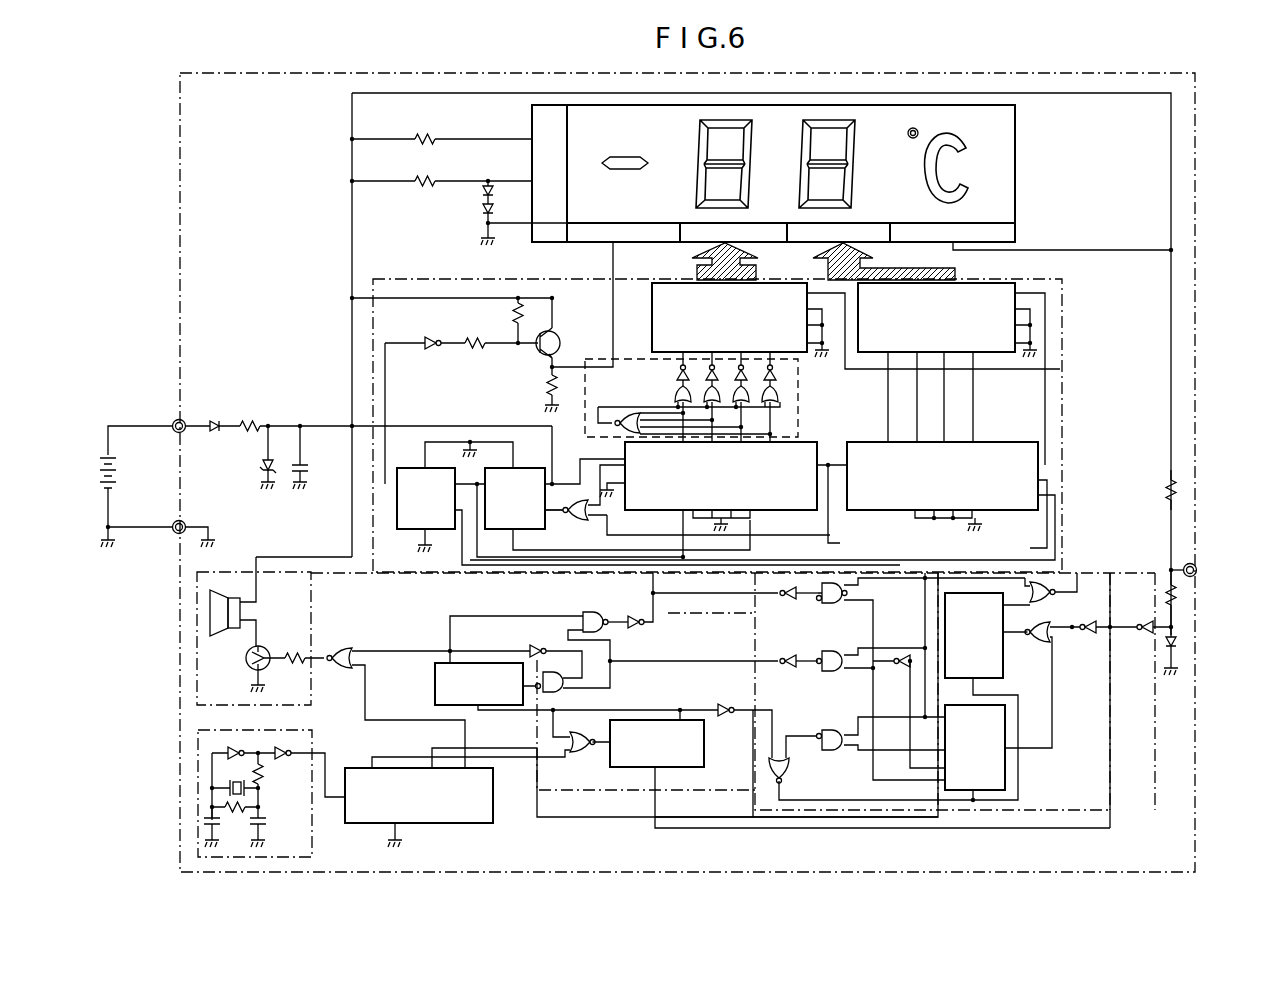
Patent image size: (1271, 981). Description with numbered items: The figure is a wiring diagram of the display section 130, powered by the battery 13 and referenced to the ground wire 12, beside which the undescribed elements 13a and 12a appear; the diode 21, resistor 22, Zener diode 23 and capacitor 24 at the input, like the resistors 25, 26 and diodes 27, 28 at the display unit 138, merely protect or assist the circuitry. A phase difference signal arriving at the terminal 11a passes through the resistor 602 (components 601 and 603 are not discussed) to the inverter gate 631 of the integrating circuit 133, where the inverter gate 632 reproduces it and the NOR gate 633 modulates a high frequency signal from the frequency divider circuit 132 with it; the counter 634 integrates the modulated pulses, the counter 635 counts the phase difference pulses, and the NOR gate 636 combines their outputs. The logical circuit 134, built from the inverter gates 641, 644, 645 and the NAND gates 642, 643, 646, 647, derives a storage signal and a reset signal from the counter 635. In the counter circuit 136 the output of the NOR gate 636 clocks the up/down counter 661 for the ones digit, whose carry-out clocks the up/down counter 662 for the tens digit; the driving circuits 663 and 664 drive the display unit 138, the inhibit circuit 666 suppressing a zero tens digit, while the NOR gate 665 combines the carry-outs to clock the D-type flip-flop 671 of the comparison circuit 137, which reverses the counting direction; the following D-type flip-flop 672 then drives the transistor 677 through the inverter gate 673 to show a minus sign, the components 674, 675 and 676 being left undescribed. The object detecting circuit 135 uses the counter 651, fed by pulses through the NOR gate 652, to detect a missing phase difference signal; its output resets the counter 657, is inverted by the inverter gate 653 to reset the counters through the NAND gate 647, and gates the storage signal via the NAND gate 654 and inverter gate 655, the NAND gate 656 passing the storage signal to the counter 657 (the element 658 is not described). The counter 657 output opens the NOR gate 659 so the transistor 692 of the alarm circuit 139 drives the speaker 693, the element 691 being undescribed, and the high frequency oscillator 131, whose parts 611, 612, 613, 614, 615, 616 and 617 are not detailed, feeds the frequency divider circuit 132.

The display section 130 is at (800, 73).
The display unit 138 is at (1015, 170).
The resistor 26 is at (432, 137).
The resistor 25 is at (432, 179).
The diode 27 is at (481, 191).
The diode 28 is at (481, 214).
The counter circuit 136 is at (1062, 296).
The comparison circuit 137 is at (373, 328).
The inverter gate 673 is at (430, 336).
The resistor 674 is at (478, 350).
The resistor 675 is at (516, 314).
The resistor 676 is at (547, 386).
The transistor 677 is at (546, 354).
The driving circuit 664 is at (652, 296).
The driving circuit 663 is at (1000, 352).
The inhibit circuit 666 is at (645, 359).
The NOR gate 665 is at (578, 500).
The up/down counter 662 is at (838, 432).
The up/down counter 661 is at (1028, 442).
The D-type flip-flop 672 is at (417, 462).
The D-type flip-flop 671 is at (530, 468).
The resistor 601 is at (1168, 490).
The resistor 602 is at (1178, 596).
The diode 603 is at (1178, 644).
The terminal 11a is at (1196, 564).
The inverter gate 631 is at (1142, 632).
The inverter gate 632 is at (1055, 600).
The NOR gate 633 is at (1042, 642).
The counter 634 is at (1064, 664).
The counter 635 is at (1005, 770).
The NOR gate 636 is at (1050, 600).
The inverter gate 641 is at (900, 668).
The NAND gate 642 is at (835, 603).
The NAND gate 643 is at (833, 671).
The inverter gate 644 is at (784, 600).
The inverter gate 645 is at (784, 668).
The NAND gate 646 is at (835, 751).
The NAND gate 647 is at (785, 770).
The counter 651 is at (704, 756).
The NOR gate 652 is at (578, 754).
The inverter gate 653 is at (726, 704).
The NAND gate 654 is at (590, 610).
The inverter gate 655 is at (635, 612).
The NAND gate 656 is at (560, 695).
The counter 657 is at (435, 684).
The inverter 658 is at (534, 645).
The NOR gate 659 is at (344, 648).
The resistor 691 is at (297, 664).
The transistor 692 is at (270, 650).
The speaker 693 is at (210, 600).
The alarm circuit 139 is at (197, 638).
The high frequency oscillator 131 is at (198, 750).
The inverter 611 is at (234, 747).
The inverter 612 is at (282, 747).
The crystal oscillator 613 is at (230, 788).
The resistor 614 is at (264, 778).
The resistor 615 is at (236, 812).
The capacitor 616 is at (205, 822).
The capacitor 617 is at (264, 828).
The frequency divider circuit 132 is at (490, 823).
The integrating circuit 133 is at (1118, 812).
The logical circuit 134 is at (815, 810).
The object detecting circuit 135 is at (653, 790).
The power supply terminal 13a is at (175, 420).
The ground terminal 12a is at (186, 522).
The power source 13 is at (112, 483).
The ground wire 12 is at (132, 530).
The diode 21 is at (214, 420).
The resistor 22 is at (252, 420).
The Zener diode 23 is at (262, 464).
The capacitor 24 is at (318, 466).